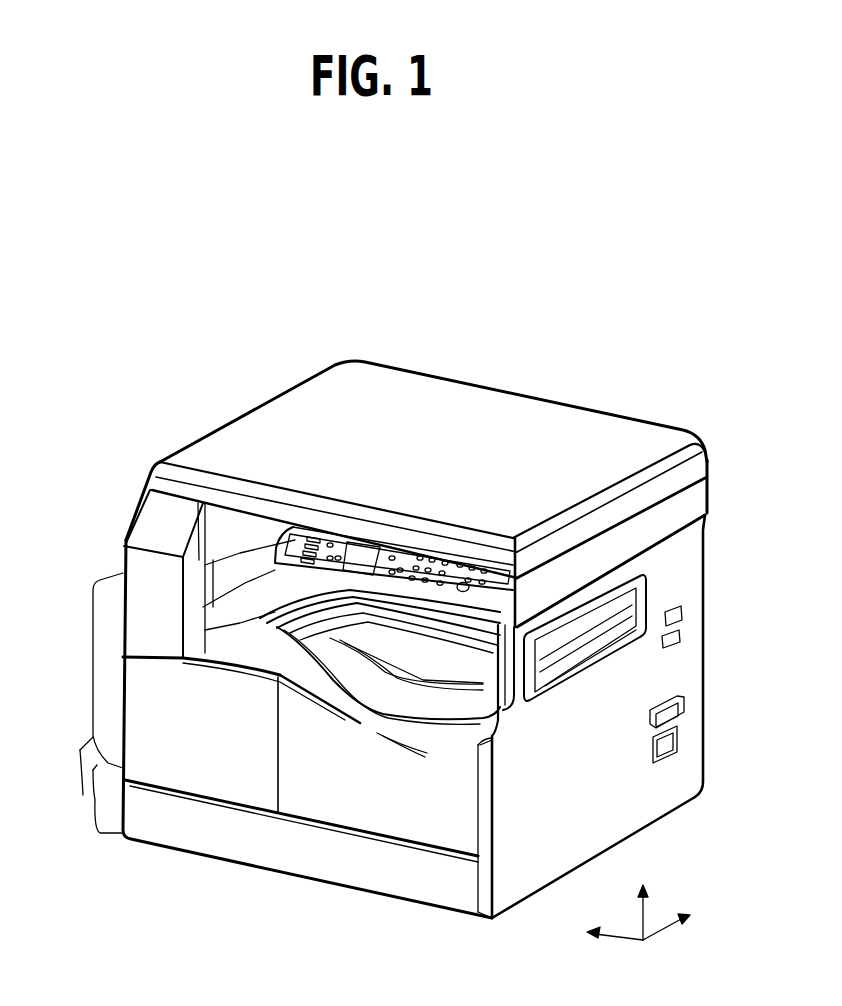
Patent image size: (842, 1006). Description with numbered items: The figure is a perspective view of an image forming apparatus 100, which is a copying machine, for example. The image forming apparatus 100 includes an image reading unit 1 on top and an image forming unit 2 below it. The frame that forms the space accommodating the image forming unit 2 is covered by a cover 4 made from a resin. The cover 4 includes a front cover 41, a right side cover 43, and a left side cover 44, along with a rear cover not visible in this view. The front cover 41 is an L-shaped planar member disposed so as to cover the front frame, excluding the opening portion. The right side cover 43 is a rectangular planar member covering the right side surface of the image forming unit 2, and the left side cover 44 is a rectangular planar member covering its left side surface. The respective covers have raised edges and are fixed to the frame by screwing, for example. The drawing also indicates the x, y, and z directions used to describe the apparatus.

The image forming apparatus 100 is at (138, 444).
The image reading unit 1 is at (718, 373).
The image forming unit 2 is at (722, 518).
The cover 4 is at (528, 963).
The front cover 41 is at (217, 783).
The right side cover 43 is at (512, 853).
The left side cover 44 is at (82, 812).